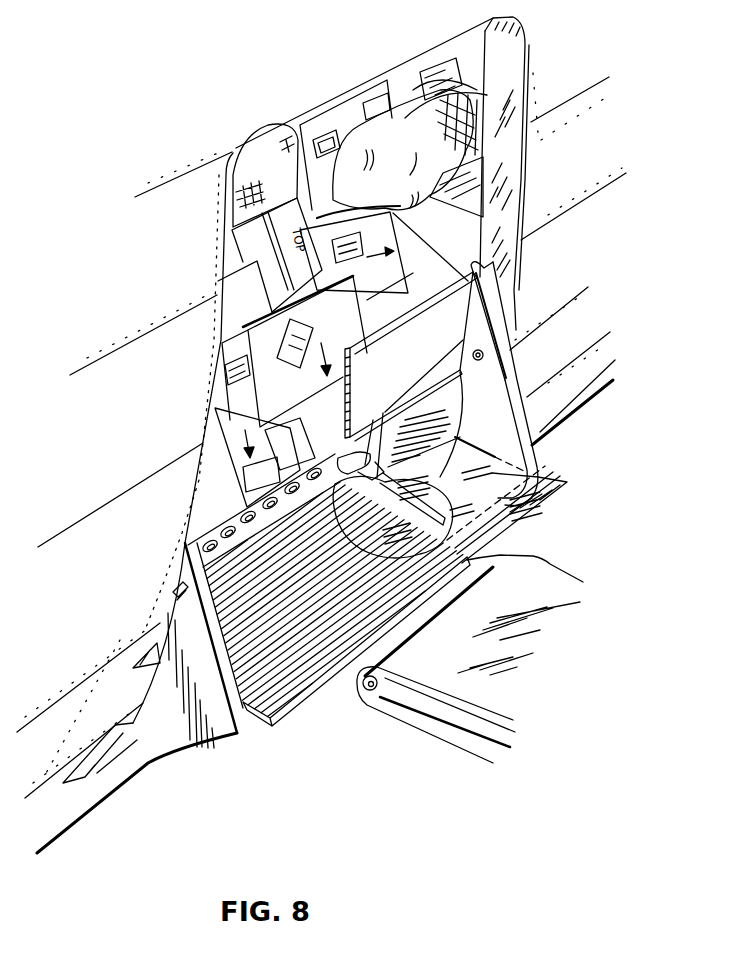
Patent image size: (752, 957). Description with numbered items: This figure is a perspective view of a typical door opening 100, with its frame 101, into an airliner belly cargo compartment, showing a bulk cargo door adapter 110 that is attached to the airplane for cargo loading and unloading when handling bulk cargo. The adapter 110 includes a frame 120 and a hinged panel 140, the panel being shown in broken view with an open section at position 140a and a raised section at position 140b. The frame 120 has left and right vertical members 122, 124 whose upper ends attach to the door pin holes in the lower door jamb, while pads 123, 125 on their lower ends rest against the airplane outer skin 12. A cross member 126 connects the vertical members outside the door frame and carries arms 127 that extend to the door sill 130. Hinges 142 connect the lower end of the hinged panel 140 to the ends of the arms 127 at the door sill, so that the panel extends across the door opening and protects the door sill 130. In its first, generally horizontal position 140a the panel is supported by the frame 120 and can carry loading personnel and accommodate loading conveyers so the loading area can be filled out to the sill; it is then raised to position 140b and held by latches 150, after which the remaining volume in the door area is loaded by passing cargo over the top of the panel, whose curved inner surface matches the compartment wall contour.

The airplane outer skin 12 is at (134, 566).
The door opening 100 is at (278, 82).
The frame 101 is at (516, 54).
The door adapter 110 is at (596, 444).
The frame 120 is at (213, 748).
The left vertical member 122 is at (175, 742).
The pad 123 is at (88, 775).
The right vertical member 124 is at (513, 440).
The pad 125 is at (392, 541).
The cross member 126 is at (512, 511).
The arms 127 is at (506, 534).
The door sill 130 is at (535, 491).
The hinged panel 140 is at (341, 690).
The open section position 140a is at (283, 690).
The raised section position 140b is at (472, 312).
The hinges 142 is at (247, 508).
The latches 150 is at (484, 357).